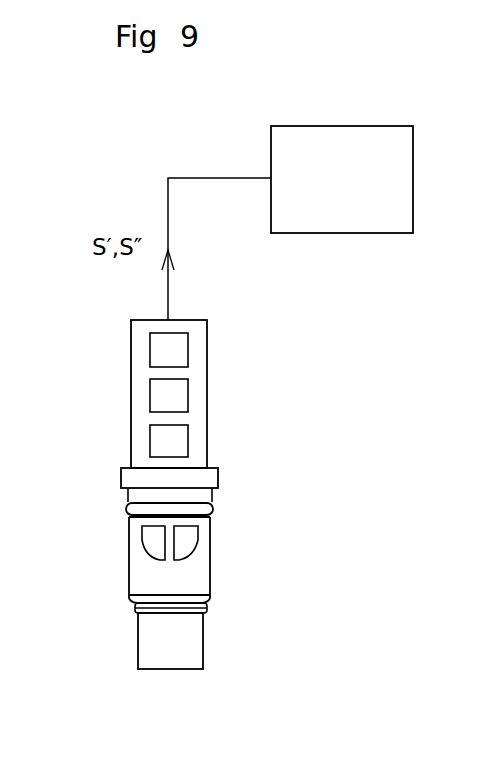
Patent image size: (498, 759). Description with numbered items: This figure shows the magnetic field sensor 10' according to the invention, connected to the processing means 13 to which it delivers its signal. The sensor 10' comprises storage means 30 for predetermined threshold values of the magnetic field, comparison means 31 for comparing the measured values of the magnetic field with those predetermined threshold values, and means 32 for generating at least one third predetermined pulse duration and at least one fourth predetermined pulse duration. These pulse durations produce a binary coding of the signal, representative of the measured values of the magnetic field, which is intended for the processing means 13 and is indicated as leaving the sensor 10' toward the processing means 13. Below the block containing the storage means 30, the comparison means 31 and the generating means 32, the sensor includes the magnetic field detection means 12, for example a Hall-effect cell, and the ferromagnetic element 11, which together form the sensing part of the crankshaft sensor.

The processing means 13 is at (354, 138).
The magnetic field sensor 10' is at (174, 389).
The means for generating predetermined pulse durations 32 is at (157, 355).
The comparison means 31 is at (157, 400).
The storage means 30 is at (157, 445).
The magnetic field detection means 12 is at (203, 560).
The ferromagnetic element 11 is at (195, 650).